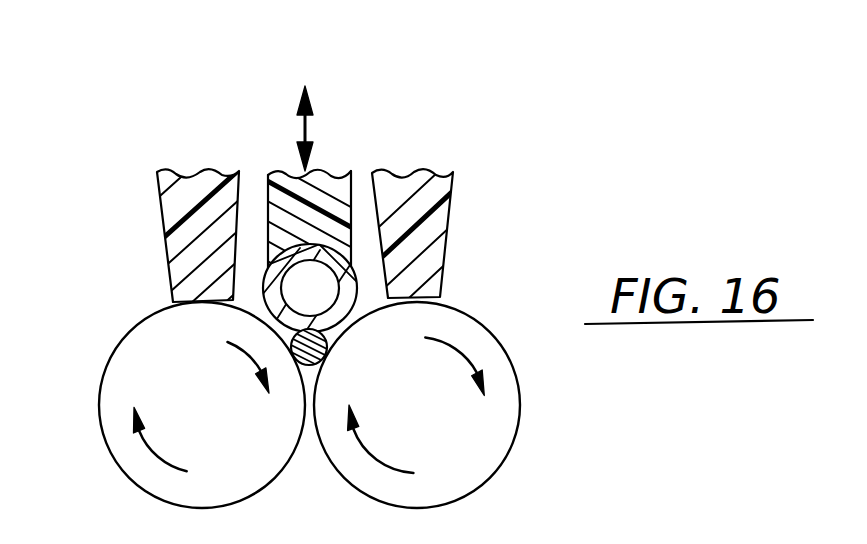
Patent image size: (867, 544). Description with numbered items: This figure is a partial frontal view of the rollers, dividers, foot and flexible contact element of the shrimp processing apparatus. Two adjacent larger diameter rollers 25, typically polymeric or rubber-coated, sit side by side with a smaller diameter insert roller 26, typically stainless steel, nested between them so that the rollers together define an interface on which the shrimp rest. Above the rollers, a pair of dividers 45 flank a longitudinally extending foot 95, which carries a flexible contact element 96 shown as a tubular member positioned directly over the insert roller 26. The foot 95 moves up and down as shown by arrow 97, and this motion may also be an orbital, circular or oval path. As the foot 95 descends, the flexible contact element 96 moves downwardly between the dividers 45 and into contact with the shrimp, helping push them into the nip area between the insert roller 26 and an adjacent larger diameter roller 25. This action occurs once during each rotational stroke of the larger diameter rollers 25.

The larger diameter roller 25 is at (100, 407).
The smaller diameter insert roller 26 is at (325, 352).
The divider 45 is at (173, 215).
The foot 95 is at (333, 177).
The flexible contact element 96 is at (270, 279).
The arrow 97 is at (310, 128).